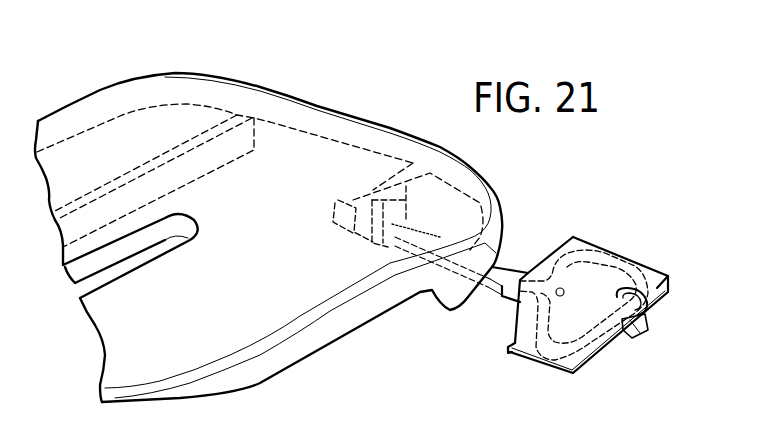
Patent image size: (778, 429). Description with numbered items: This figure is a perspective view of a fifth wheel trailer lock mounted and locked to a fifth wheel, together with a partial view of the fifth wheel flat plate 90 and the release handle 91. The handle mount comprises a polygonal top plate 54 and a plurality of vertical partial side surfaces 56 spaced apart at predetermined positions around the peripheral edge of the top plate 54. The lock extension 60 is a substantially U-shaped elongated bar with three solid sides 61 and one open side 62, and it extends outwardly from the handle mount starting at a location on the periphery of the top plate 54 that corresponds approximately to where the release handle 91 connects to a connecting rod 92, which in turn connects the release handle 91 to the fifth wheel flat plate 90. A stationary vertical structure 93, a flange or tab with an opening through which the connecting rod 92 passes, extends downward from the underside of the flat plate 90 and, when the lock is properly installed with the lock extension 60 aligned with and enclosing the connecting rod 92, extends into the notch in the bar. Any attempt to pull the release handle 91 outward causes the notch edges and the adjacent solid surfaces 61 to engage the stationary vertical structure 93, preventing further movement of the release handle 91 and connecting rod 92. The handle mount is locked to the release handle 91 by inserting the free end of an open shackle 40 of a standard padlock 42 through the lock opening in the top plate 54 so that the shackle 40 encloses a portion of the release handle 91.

The fifth wheel flat plate 90 is at (90, 110).
The connecting rod 92 is at (350, 207).
The stationary vertical structure 93 is at (393, 210).
The solid sides 61 is at (507, 267).
The lock extension 60 is at (522, 270).
The open side 62 is at (530, 270).
The top plate 54 is at (655, 270).
The release handle 91 is at (605, 253).
The shackle 40 is at (657, 310).
The padlock 42 is at (647, 334).
The vertical partial side surfaces 56 is at (507, 350).